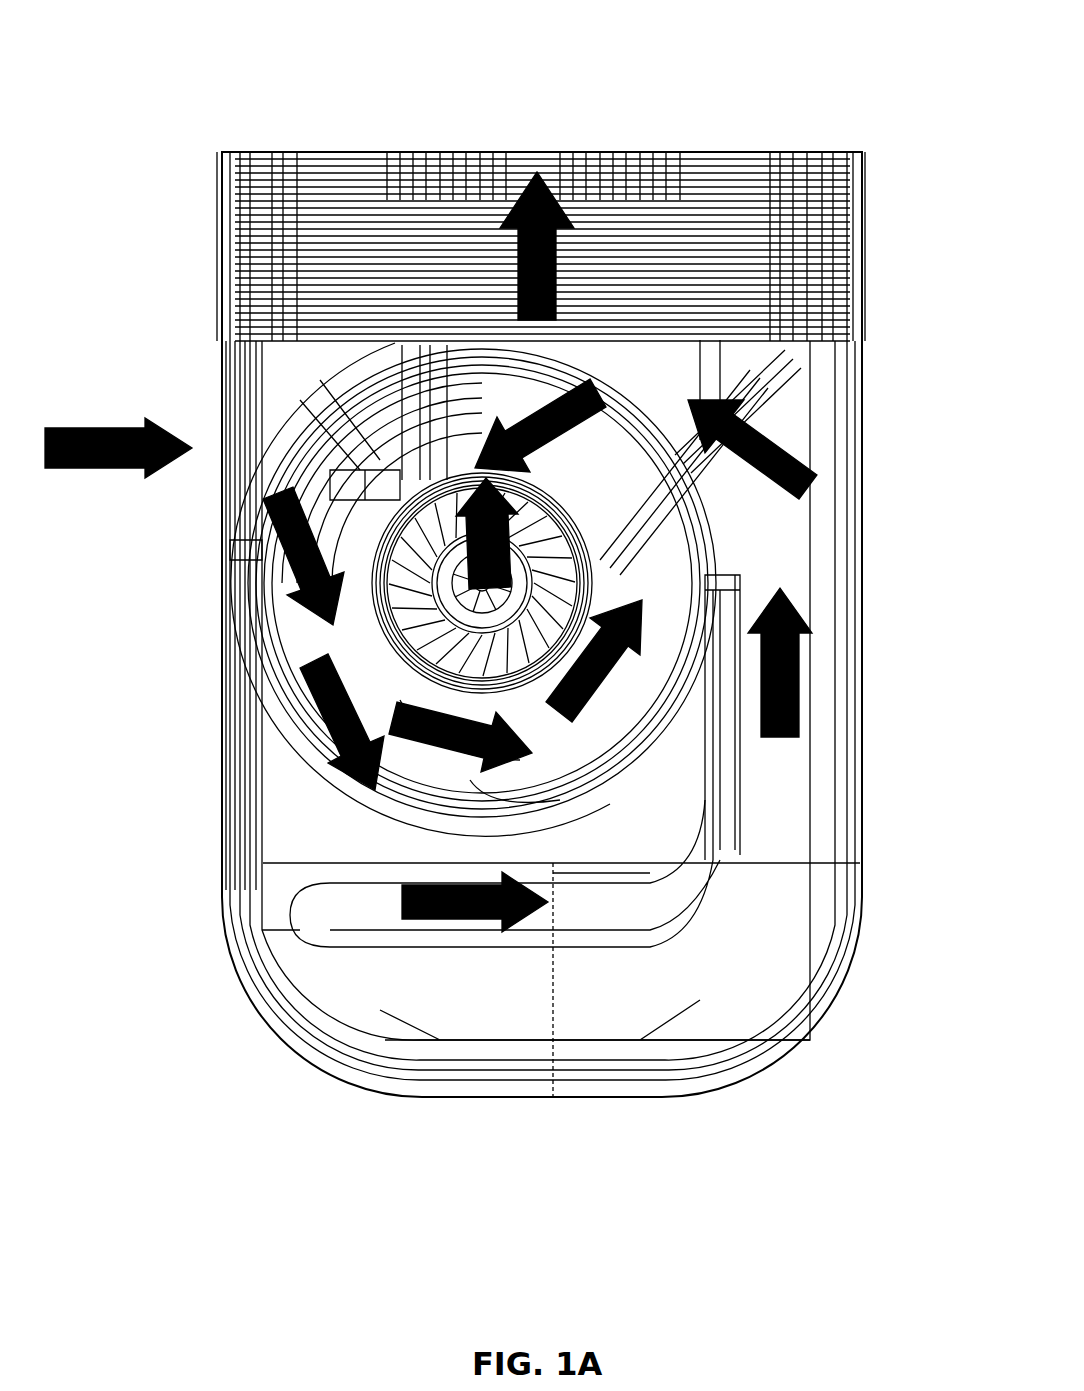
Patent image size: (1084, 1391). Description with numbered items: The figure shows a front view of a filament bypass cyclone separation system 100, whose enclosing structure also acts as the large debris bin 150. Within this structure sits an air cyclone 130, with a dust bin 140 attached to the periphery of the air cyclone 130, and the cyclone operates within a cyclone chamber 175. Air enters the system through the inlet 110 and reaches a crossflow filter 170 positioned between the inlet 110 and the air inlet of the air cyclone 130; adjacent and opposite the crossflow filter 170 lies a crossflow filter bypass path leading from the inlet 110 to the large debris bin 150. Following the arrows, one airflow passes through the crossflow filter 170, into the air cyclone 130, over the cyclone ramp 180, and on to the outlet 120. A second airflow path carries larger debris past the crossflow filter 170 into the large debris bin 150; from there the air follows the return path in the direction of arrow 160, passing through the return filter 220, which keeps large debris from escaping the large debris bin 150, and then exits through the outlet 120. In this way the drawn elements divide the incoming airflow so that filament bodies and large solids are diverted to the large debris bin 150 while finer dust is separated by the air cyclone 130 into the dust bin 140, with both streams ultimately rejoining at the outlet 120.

The filament bypass cyclone separation system 100 is at (517, 29).
The inlet 110 is at (215, 420).
The outlet 120 is at (557, 148).
The air cyclone 130 is at (310, 620).
The dust bin 140 is at (300, 893).
The large debris bin 150 is at (730, 983).
The return path arrow 160 is at (812, 462).
The crossflow filter 170 is at (400, 797).
The cyclone chamber 175 is at (236, 546).
The cyclone ramp 180 is at (600, 450).
The return filter 220 is at (770, 382).